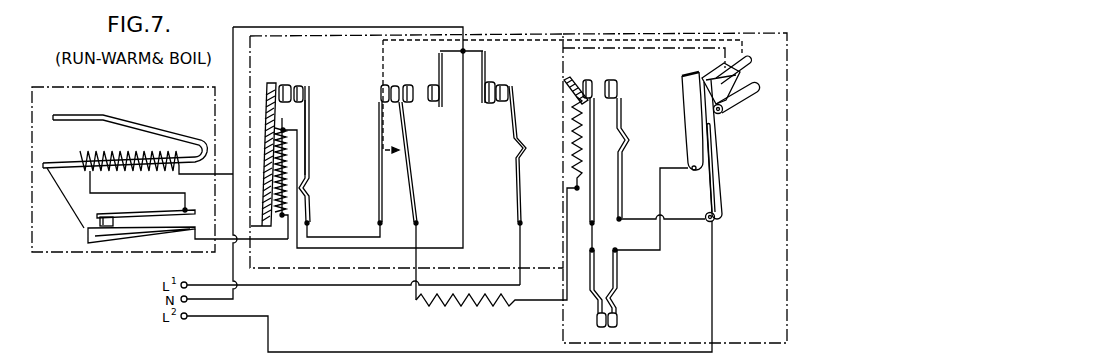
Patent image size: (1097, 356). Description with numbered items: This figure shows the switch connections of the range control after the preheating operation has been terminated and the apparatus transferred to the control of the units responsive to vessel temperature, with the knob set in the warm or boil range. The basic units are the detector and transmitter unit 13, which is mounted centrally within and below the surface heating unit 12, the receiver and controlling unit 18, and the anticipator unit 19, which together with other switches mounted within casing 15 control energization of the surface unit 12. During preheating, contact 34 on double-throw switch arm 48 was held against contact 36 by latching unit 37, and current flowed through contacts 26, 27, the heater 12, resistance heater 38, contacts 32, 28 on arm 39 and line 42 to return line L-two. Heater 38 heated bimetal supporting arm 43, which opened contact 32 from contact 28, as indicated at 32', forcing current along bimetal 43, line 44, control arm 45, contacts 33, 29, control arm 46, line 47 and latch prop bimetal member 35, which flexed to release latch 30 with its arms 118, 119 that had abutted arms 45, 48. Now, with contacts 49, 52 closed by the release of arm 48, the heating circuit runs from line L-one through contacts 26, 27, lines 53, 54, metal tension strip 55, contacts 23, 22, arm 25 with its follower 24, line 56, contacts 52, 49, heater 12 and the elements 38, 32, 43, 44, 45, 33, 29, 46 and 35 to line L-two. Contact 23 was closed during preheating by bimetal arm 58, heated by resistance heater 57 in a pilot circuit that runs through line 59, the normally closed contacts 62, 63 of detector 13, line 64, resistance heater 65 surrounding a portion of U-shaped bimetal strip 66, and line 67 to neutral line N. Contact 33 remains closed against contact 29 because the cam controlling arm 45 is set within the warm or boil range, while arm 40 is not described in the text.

The surface heating unit 12 is at (482, 302).
The detector and transmitter unit 13 is at (45, 85).
The casing 15 is at (505, 33).
The receiver and controlling unit 18 is at (298, 73).
The anticipator unit 19 is at (604, 58).
The contact 22 is at (304, 87).
The contact 23 is at (285, 84).
The follower 24 is at (312, 193).
The arm 25 is at (308, 150).
The switch contact 26 is at (501, 84).
The contact 27 is at (489, 104).
The switch contact 28 is at (612, 80).
The switch contact 29 is at (617, 322).
The latch 30 is at (742, 78).
The contact 32 is at (585, 76).
The open position of contact 32 32' is at (559, 83).
The contact 33 is at (598, 325).
The contact 34 is at (409, 85).
The latch prop bimetal member 35 is at (699, 117).
The contact 36 is at (437, 108).
The latching unit 37 is at (695, 70).
The resistance heater 38 is at (576, 138).
The arm 39 is at (623, 132).
The switch blade 40 is at (519, 190).
The line 42 is at (704, 222).
The bimetal supporting arm 43 is at (593, 172).
The line 44 is at (593, 247).
The control arm 45 is at (593, 270).
The control arm 46 is at (613, 290).
The line 47 is at (661, 207).
The double-throw switch arm 48 is at (417, 192).
The contact 49 is at (394, 84).
The contact 52 is at (380, 85).
The line 53 is at (465, 27).
The line 54 is at (377, 26).
The metal tension strip 55 is at (262, 138).
The line 56 is at (334, 237).
The resistance heater 57 is at (280, 180).
The bimetal arm 58 is at (284, 118).
The line 59 is at (285, 240).
The contact 62 is at (86, 234).
The contact 63 is at (101, 221).
The line 64 is at (147, 210).
The resistance heater 65 is at (110, 155).
The U-shaped bimetal strip 66 is at (160, 128).
The line 67 is at (219, 173).
The arm 118 is at (718, 72).
The arm 119 is at (746, 61).